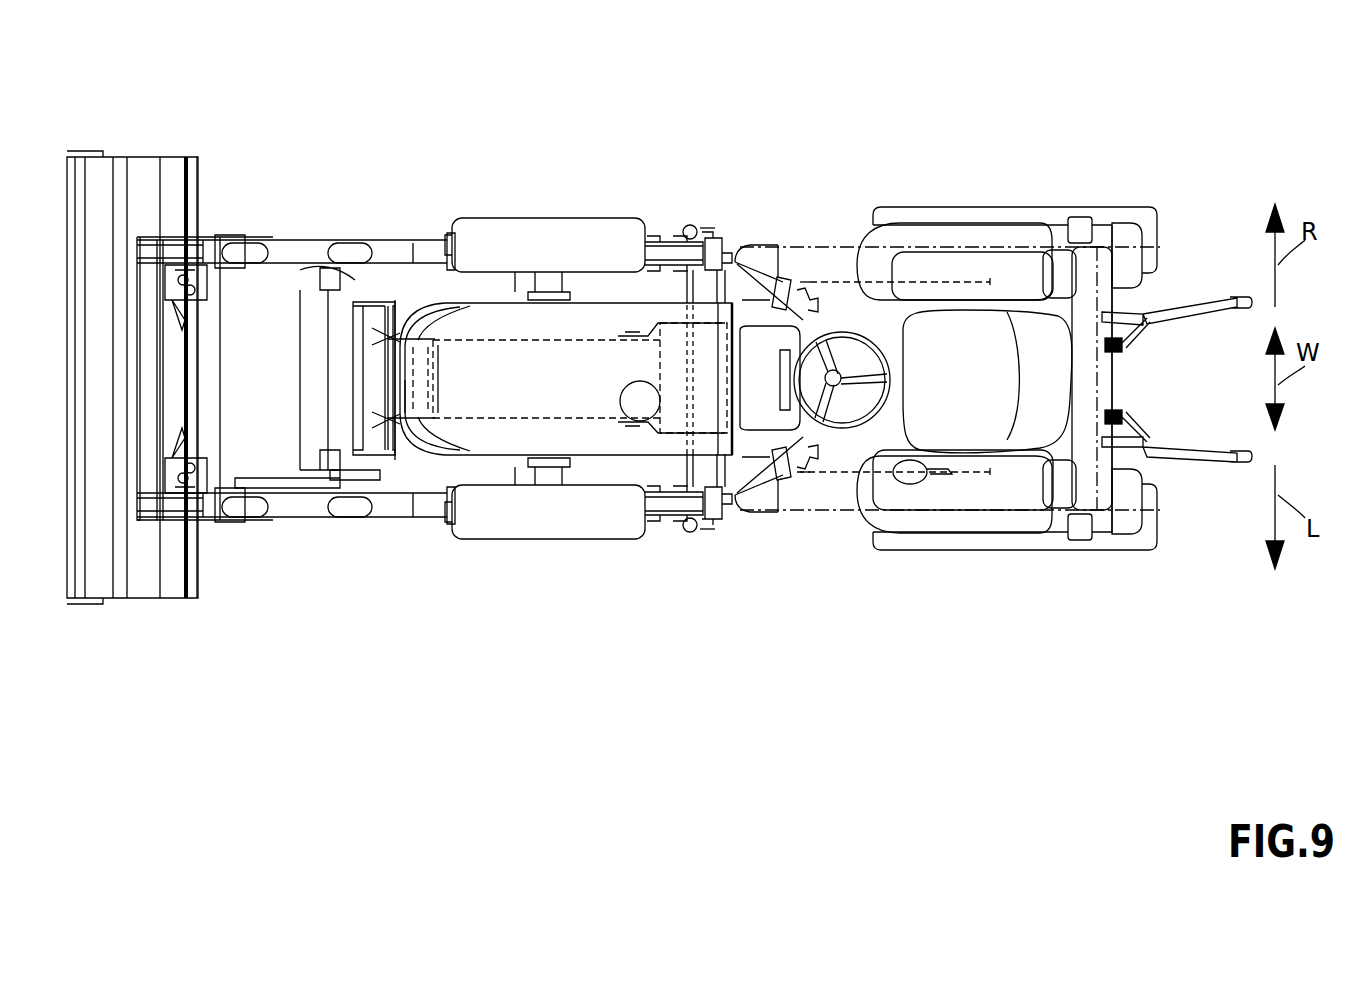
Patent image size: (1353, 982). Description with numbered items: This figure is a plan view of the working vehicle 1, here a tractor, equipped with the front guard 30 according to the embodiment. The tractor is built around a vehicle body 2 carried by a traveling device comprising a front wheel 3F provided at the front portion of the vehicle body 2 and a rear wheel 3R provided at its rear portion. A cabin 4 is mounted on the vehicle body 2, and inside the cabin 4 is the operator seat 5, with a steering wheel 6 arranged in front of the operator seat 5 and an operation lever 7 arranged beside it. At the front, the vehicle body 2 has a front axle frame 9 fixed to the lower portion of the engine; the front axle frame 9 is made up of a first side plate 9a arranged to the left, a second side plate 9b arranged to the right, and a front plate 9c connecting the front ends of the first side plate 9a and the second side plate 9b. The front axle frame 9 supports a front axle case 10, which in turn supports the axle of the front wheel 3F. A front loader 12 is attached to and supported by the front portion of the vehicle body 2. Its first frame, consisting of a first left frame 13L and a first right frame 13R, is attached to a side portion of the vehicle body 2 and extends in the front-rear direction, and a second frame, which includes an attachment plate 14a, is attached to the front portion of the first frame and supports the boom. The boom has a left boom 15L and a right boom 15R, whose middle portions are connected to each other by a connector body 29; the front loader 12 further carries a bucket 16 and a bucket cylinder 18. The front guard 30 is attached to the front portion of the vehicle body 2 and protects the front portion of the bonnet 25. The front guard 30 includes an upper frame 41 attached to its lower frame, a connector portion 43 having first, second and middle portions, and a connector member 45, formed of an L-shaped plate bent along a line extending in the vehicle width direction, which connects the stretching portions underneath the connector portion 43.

The working vehicle 1 is at (824, 101).
The vehicle body 2 is at (630, 302).
The front wheel 3F is at (497, 222).
The rear wheel 3R is at (1137, 208).
The cabin 4 is at (947, 252).
The operator seat 5 is at (1034, 342).
The steering wheel 6 is at (841, 332).
The operation lever 7 is at (912, 484).
The front axle frame 9 is at (490, 335).
The first side plate 9a is at (479, 432).
The second side plate 9b is at (438, 293).
The front plate 9c is at (404, 482).
The front axle case 10 is at (552, 292).
The front loader 12 is at (392, 535).
The first right frame 13R is at (812, 292).
The first left frame 13L is at (837, 472).
The attachment plate 14a is at (673, 292).
The right boom 15R is at (551, 236).
The left boom 15L is at (552, 506).
The bucket 16 is at (150, 157).
The bucket cylinder 18 is at (285, 247).
The bonnet 25 is at (428, 472).
The connector body 29 is at (297, 388).
The front guard 30 is at (394, 284).
The upper frame 41 is at (368, 527).
The connector portion 43 is at (378, 333).
The connector member 45 is at (357, 406).